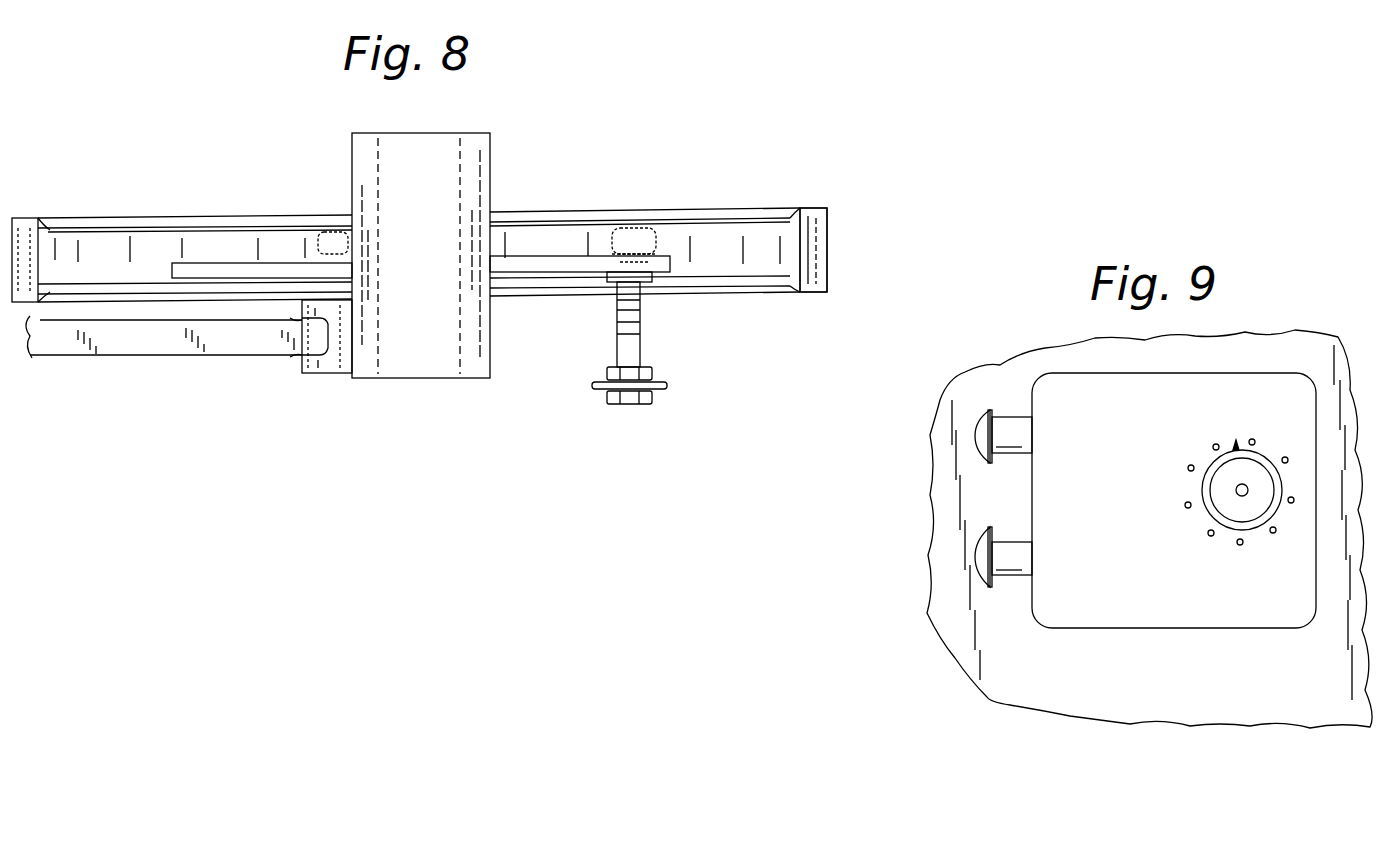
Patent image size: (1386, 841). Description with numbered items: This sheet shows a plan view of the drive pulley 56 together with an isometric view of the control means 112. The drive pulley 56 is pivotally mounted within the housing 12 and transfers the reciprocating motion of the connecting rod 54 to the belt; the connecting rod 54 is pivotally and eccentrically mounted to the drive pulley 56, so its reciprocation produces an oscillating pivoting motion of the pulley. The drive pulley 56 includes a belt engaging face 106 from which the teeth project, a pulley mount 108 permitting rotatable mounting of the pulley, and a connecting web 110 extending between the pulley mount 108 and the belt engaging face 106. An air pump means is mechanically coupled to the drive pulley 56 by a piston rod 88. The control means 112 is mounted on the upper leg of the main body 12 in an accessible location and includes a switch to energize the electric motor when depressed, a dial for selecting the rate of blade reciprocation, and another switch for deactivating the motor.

In FIG. 9, the housing 12 is at (1210, 352).
In FIG. 8, the connecting rod 54 is at (140, 333).
In FIG. 8, the drive pulley 56 is at (738, 208).
In FIG. 8, the piston rod 88 is at (667, 385).
In FIG. 8, the belt engaging face 106 is at (827, 215).
In FIG. 8, the pulley mount 108 is at (468, 148).
In FIG. 8, the connecting web 110 is at (218, 277).
In FIG. 9, the control means 112 is at (1237, 630).